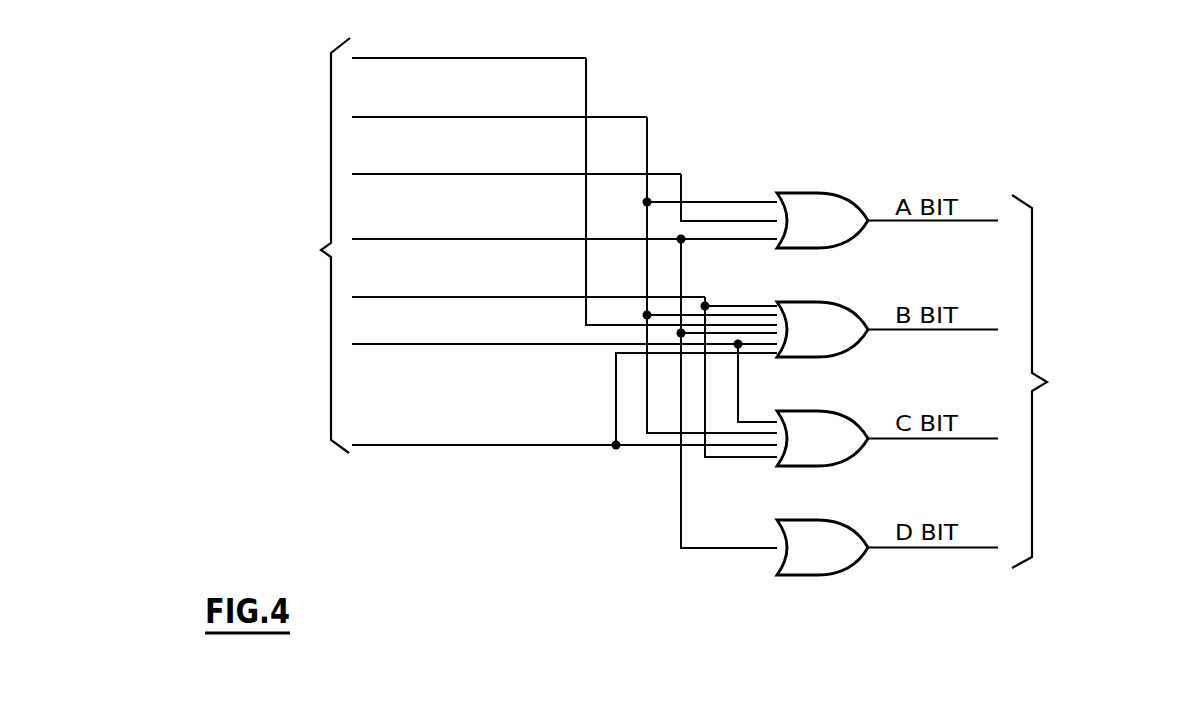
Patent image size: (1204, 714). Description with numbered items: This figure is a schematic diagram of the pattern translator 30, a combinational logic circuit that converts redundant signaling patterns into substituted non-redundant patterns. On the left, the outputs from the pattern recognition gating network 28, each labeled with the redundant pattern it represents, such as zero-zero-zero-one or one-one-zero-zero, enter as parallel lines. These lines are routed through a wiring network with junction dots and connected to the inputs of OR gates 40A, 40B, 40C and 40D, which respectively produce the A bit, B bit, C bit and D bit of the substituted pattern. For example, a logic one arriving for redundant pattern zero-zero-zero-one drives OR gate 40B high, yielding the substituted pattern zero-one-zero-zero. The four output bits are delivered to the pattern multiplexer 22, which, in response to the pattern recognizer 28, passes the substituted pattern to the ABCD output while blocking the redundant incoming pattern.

The multiplexer 22 is at (1090, 381).
The pattern recognition circuit 28 is at (261, 245).
The pattern translator 30 is at (652, 606).
The OR gate 40A is at (793, 193).
The OR gate 40B is at (793, 302).
The OR gate 40C is at (793, 411).
The OR gate 40D is at (793, 520).